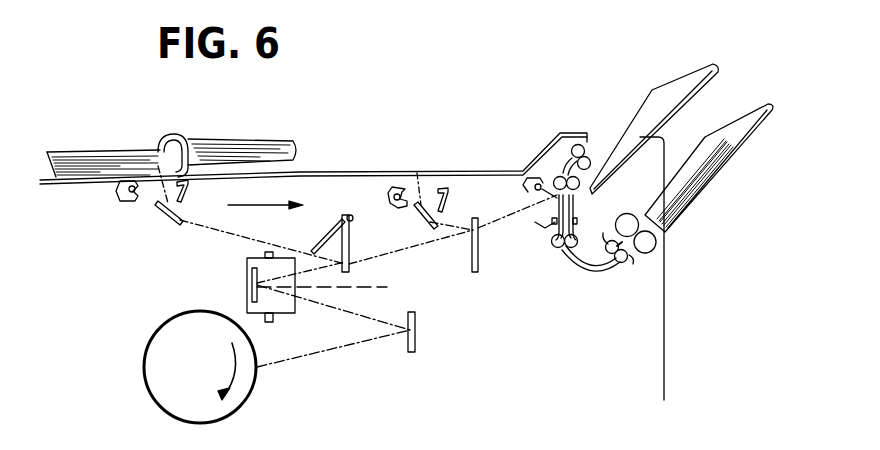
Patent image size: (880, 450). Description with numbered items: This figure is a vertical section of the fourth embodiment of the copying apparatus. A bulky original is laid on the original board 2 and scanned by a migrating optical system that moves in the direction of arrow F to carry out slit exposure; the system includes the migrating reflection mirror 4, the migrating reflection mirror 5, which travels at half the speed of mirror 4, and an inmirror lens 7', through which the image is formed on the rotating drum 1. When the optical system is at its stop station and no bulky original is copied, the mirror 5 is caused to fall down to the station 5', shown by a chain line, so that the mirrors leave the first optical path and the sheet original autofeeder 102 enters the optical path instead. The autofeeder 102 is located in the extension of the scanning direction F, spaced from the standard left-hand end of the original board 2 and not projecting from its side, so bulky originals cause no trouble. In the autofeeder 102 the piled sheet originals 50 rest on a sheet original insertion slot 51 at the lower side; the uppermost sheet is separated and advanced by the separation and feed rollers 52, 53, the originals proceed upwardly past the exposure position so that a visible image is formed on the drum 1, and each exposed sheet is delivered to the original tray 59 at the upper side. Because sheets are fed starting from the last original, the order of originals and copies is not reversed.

The drum 1 is at (241, 405).
The original board 2 is at (340, 168).
The migrating reflection mirror 4 is at (157, 221).
The migrating reflection mirror 5 is at (367, 243).
The fallen station of mirror 5' is at (326, 219).
The inmirror lens 7' is at (249, 285).
The piled sheet originals 50 is at (703, 178).
The sheet original insertion slot 51 is at (750, 114).
The separation and feed roller 52 is at (627, 213).
The separation and feed roller 53 is at (645, 254).
The original tray 59 is at (666, 92).
The sheet original autofeeder section 102 is at (582, 114).
The scanning direction arrow F is at (257, 205).